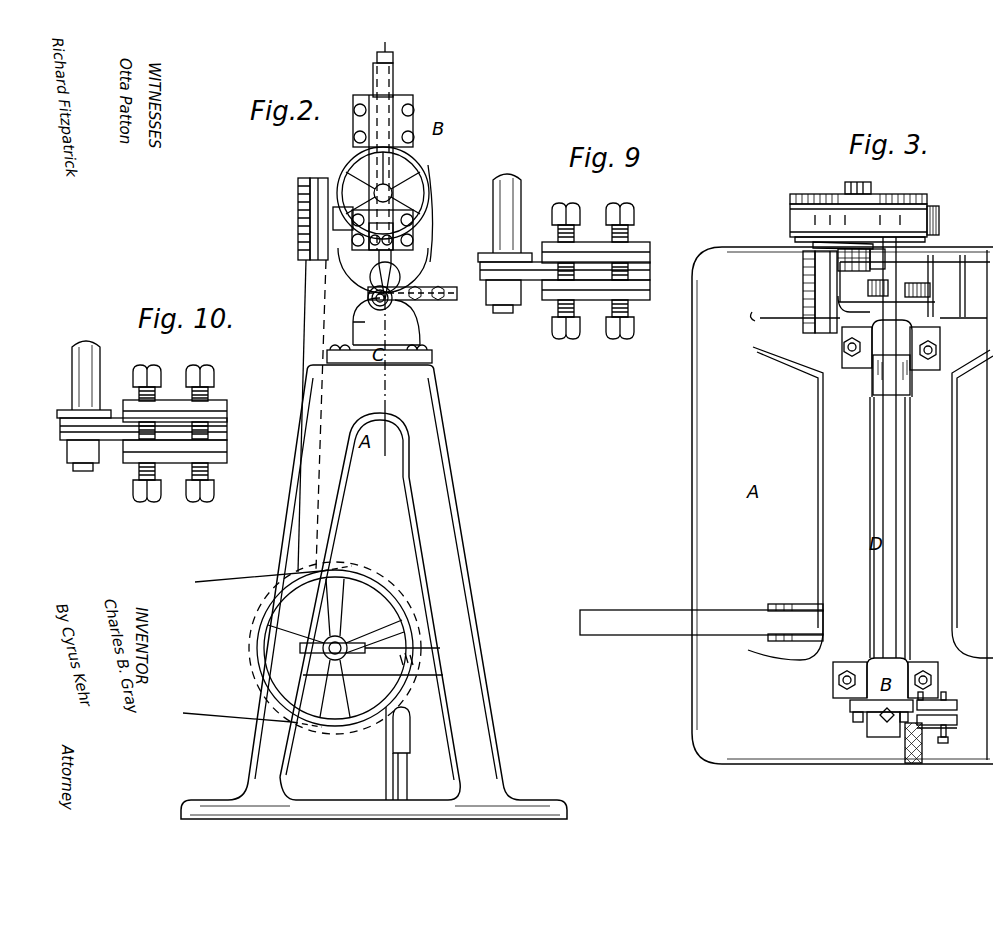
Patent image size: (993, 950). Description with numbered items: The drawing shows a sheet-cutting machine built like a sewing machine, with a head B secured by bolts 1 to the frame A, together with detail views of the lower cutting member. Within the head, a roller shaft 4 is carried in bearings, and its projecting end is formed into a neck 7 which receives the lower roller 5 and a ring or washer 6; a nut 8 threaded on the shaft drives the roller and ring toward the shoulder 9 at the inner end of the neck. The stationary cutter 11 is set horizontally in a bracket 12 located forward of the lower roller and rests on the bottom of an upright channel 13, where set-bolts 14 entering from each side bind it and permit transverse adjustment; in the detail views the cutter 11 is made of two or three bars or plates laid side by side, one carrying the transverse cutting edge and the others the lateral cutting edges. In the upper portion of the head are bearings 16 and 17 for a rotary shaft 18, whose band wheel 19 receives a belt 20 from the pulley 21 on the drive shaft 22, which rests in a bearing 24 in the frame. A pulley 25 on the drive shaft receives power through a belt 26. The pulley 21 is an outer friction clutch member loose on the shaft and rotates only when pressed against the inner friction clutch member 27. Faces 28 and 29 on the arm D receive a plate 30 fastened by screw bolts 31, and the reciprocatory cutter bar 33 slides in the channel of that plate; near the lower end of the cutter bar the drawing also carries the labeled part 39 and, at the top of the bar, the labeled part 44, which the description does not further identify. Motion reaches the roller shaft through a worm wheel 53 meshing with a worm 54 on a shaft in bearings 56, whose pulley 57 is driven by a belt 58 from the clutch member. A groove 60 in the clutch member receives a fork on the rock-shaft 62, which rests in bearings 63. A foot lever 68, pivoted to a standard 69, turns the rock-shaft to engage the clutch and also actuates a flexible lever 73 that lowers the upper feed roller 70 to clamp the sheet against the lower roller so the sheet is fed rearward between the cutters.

In FIG. 2, the bolts 1 is at (345, 333).
In FIG. 3, the bolts 1 is at (844, 346).
In FIG. 2, the roller shaft 4 is at (385, 45).
In FIG. 9, the roller shaft 4 is at (505, 205).
In FIG. 10, the roller shaft 4 is at (85, 360).
In FIG. 2, the roller 5 is at (372, 299).
In FIG. 9, the roller 5 is at (490, 253).
In FIG. 10, the roller 5 is at (68, 412).
In FIG. 9, the ring or washer 6 is at (488, 270).
In FIG. 10, the ring or washer 6 is at (68, 433).
In FIG. 9, the neck 7 is at (503, 313).
In FIG. 10, the neck 7 is at (82, 471).
In FIG. 9, the nut 8 is at (500, 290).
In FIG. 10, the nut 8 is at (72, 452).
In FIG. 2, the shoulder 9 is at (360, 318).
In FIG. 9, the shoulder 9 is at (520, 255).
In FIG. 10, the shoulder 9 is at (103, 412).
In FIG. 9, the stationary cutter 11 is at (597, 294).
In FIG. 10, the stationary cutter 11 is at (171, 446).
In FIG. 3, the stationary cutter 11 is at (957, 707).
In FIG. 2, the bracket 12 is at (452, 302).
In FIG. 3, the bracket 12 is at (958, 728).
In FIG. 9, the upright channel 13 is at (645, 256).
In FIG. 10, the upright channel 13 is at (222, 454).
In FIG. 3, the upright channel 13 is at (957, 720).
In FIG. 9, the set-bolts 14 is at (616, 209).
In FIG. 10, the set-bolts 14 is at (198, 372).
In FIG. 3, the set-bolts 14 is at (946, 694).
In FIG. 3, the bearing 16 is at (877, 397).
In FIG. 3, the bearing 17 is at (870, 657).
In FIG. 3, the rotary shaft 18 is at (883, 494).
In FIG. 2, the band wheel 19 is at (427, 171).
In FIG. 3, the band wheel 19 is at (930, 208).
In FIG. 2, the belt 20 is at (415, 212).
In FIG. 3, the belt 20 is at (940, 222).
In FIG. 2, the pulley 21 is at (366, 592).
In FIG. 3, the pulley 21 is at (790, 206).
In FIG. 2, the drive shaft 22 is at (344, 644).
In FIG. 2, the bearing 24 is at (362, 650).
In FIG. 2, the pulley 25 is at (257, 648).
In FIG. 3, the pulley 25 is at (790, 605).
In FIG. 2, the belt 26 is at (250, 585).
In FIG. 3, the belt 26 is at (710, 620).
In FIG. 3, the inner friction clutch member 27 is at (845, 190).
In FIG. 3, the face 28 is at (851, 706).
In FIG. 2, the face 29 is at (413, 224).
In FIG. 2, the plate 30 is at (386, 113).
In FIG. 3, the plate 30 is at (868, 736).
In FIG. 2, the screw bolts 31 is at (356, 113).
In FIG. 3, the screw bolts 31 is at (853, 720).
In FIG. 2, the reciprocatory cutter bar 33 is at (373, 78).
In FIG. 2, the needle 39 is at (396, 254).
In FIG. 3, the needle 39 is at (834, 252).
In FIG. 2, the nut 44 is at (393, 57).
In FIG. 3, the nut 44 is at (888, 723).
In FIG. 2, the worm wheel 53 is at (427, 268).
In FIG. 3, the worm wheel 53 is at (931, 288).
In FIG. 3, the worm 54 is at (893, 283).
In FIG. 2, the bearings 56 is at (343, 218).
In FIG. 3, the bearings 56 is at (935, 303).
In FIG. 2, the pulley 57 is at (298, 215).
In FIG. 3, the pulley 57 is at (803, 283).
In FIG. 2, the belt 58 is at (306, 292).
In FIG. 3, the belt 58 is at (815, 295).
In FIG. 3, the groove 60 is at (882, 257).
In FIG. 3, the rock-shaft 62 is at (935, 264).
In FIG. 3, the bearings 63 is at (966, 262).
In FIG. 2, the foot lever 68 is at (405, 727).
In FIG. 3, the foot lever 68 is at (912, 765).
In FIG. 2, the standard 69 is at (386, 755).
In FIG. 2, the upper feed roller 70 is at (374, 278).
In FIG. 3, the lever 73 is at (910, 487).